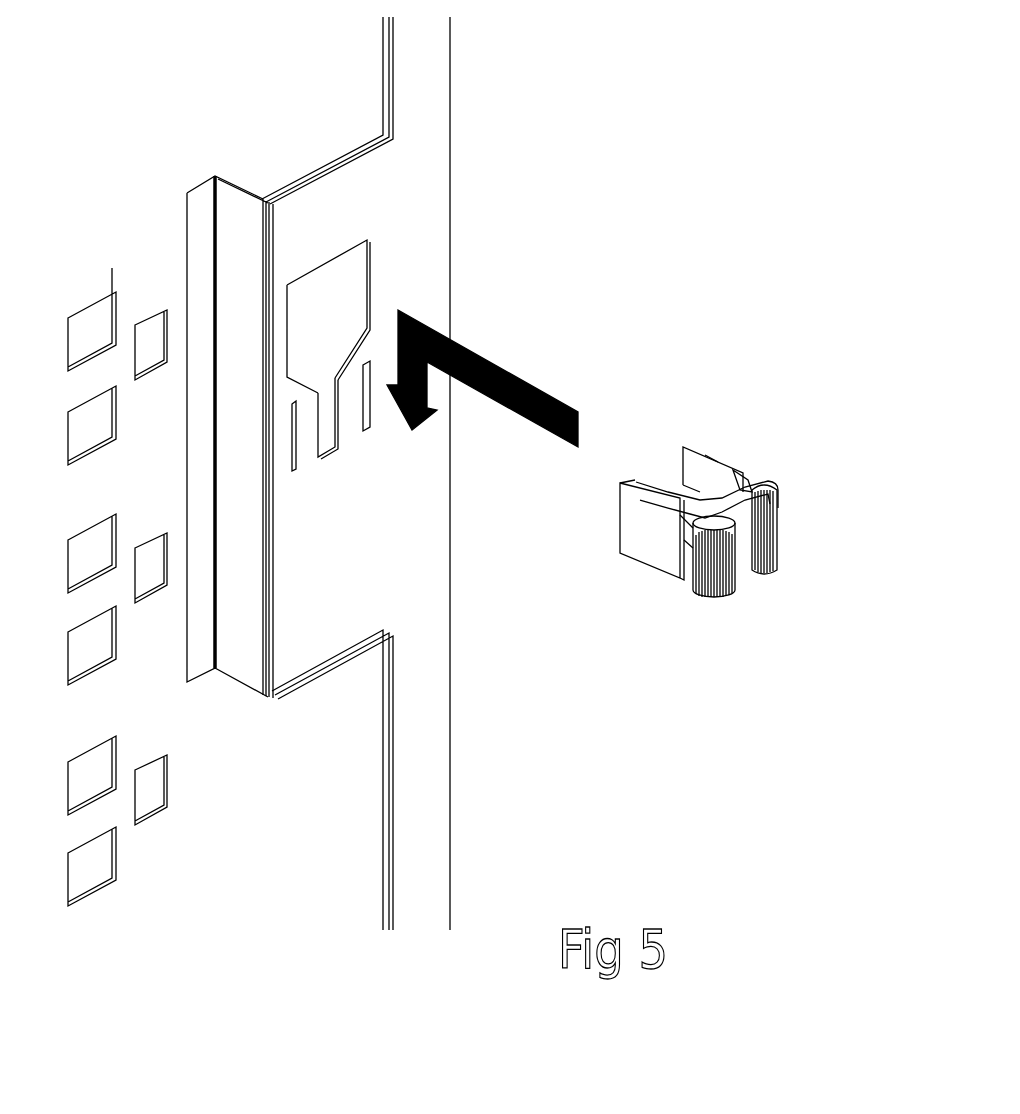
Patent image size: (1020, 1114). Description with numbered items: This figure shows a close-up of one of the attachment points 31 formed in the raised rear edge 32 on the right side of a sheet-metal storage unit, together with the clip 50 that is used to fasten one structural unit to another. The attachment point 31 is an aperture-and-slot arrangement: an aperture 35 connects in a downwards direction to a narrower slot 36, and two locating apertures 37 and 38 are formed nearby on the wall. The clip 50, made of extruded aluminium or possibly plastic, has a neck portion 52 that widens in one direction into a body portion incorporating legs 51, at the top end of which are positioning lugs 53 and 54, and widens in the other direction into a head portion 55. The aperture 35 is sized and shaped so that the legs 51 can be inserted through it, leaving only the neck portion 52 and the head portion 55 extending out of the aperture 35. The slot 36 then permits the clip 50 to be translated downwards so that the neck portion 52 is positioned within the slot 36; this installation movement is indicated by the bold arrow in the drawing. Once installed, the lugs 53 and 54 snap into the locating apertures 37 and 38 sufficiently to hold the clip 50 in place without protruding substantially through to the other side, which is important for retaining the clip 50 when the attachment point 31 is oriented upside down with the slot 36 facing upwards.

The attachment point 31 is at (368, 277).
The raised rear edge 32 is at (228, 177).
The aperture 35 is at (322, 318).
The slot 36 is at (322, 453).
The locating aperture 37 is at (296, 472).
The locating aperture 38 is at (363, 431).
The clip 50 is at (707, 492).
The legs 51 is at (705, 455).
The neck portion 52 is at (714, 523).
The positioning lug 53 is at (750, 483).
The positioning lug 54 is at (680, 517).
The head portion 55 is at (762, 520).